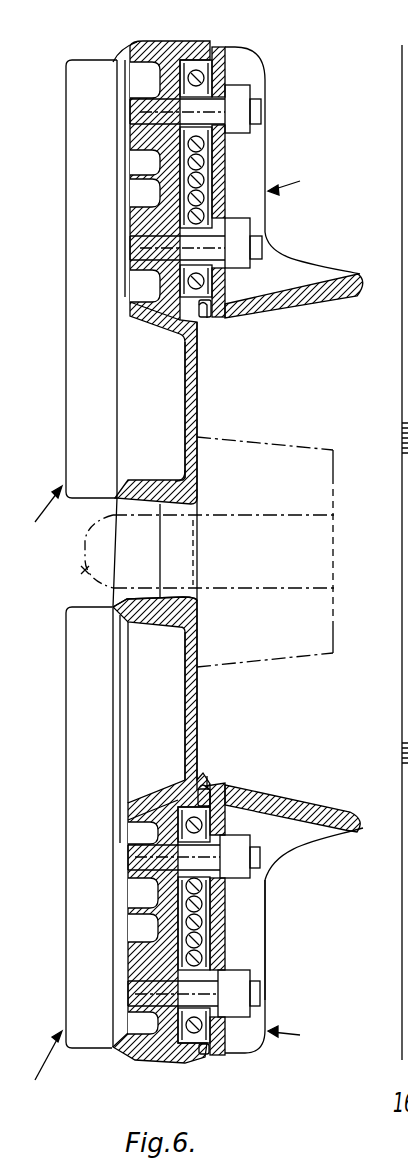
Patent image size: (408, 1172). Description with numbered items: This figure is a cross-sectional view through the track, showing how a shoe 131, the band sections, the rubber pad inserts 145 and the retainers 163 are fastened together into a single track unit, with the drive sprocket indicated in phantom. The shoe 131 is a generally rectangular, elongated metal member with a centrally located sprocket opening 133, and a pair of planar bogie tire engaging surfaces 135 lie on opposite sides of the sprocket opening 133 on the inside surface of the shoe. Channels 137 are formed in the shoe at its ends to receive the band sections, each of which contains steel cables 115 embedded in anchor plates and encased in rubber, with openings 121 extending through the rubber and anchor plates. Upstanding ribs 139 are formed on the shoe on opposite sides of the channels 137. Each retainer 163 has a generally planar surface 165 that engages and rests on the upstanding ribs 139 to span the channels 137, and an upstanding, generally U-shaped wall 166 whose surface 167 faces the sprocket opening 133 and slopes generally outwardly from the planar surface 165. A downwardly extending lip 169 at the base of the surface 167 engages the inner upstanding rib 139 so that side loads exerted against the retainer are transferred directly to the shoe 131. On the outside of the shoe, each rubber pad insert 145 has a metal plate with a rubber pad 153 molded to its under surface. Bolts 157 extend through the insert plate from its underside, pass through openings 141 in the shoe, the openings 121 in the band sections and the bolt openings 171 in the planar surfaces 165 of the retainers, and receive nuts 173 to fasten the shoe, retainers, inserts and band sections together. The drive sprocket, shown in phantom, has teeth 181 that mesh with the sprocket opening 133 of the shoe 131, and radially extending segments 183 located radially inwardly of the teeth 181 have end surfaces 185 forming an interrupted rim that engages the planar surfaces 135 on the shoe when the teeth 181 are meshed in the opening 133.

The steel cables 115 is at (197, 162).
The openings 121 is at (218, 111).
The shoe 131 is at (199, 690).
The sprocket opening 133 is at (190, 599).
The planar bogie tire engaging surfaces 135 is at (197, 422).
The channels 137 is at (214, 143).
The upstanding ribs 139 is at (213, 46).
The openings 141 is at (140, 70).
The rubber pad inserts 145 is at (53, 792).
The rubber pad 153 is at (72, 380).
The bolts 157 is at (262, 243).
The retainers 163 is at (280, 550).
The planar surface 165 is at (175, 170).
The U-shaped wall 166 is at (265, 990).
The surface 167 is at (325, 304).
The lip 169 is at (205, 322).
The bolt openings 171 is at (175, 116).
The nuts 173 is at (272, 265).
The teeth 181 is at (84, 572).
The radially extending segments 183 is at (322, 449).
The end surfaces 185 is at (190, 460).